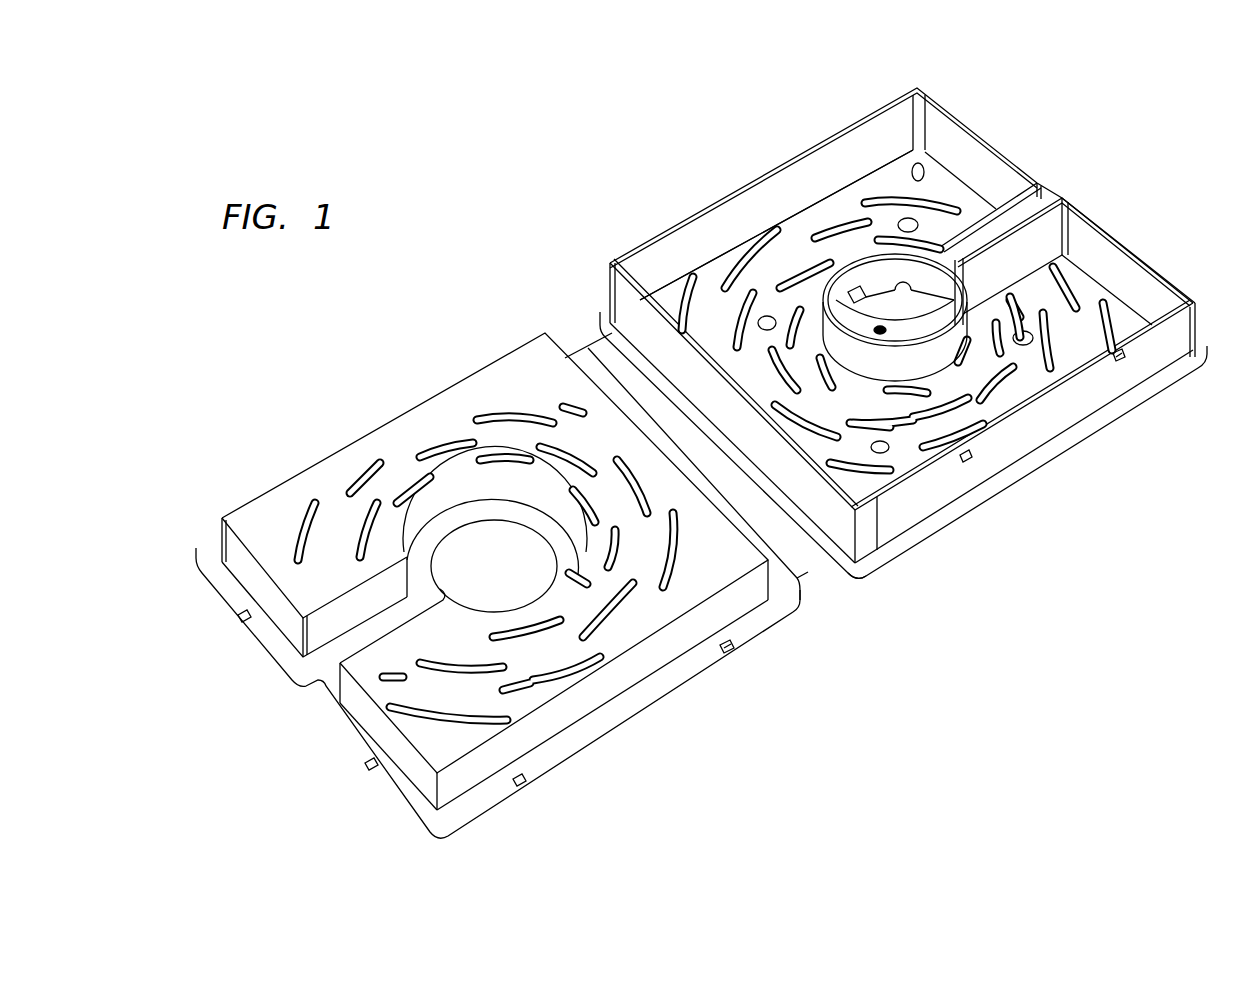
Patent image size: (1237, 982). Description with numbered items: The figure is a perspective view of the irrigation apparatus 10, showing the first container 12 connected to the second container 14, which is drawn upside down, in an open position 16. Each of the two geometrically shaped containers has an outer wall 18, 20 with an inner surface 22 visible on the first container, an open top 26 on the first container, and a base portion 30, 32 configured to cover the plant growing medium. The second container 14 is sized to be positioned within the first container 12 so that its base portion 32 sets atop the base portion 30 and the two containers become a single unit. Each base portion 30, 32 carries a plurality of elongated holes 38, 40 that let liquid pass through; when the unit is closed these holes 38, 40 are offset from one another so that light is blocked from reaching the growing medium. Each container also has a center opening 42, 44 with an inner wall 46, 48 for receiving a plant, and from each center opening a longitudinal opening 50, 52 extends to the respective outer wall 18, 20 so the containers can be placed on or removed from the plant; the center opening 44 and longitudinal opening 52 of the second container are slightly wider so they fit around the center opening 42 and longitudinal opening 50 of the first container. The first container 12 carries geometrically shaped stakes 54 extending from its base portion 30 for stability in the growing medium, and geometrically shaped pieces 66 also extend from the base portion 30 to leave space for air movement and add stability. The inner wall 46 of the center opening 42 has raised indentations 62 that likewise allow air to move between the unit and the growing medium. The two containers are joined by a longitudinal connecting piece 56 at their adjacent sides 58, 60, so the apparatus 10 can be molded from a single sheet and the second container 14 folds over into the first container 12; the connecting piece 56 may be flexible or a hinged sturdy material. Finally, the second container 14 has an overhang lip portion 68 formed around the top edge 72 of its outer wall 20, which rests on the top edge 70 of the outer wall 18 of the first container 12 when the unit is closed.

The irrigation apparatus 10 is at (601, 158).
The first container 12 is at (905, 110).
The second container 14 is at (548, 352).
The open position 16 is at (955, 718).
The outer wall 18 is at (627, 248).
The outer wall 20 is at (577, 702).
The inner surface 22 is at (858, 150).
The open top 26 is at (787, 140).
The base portion 30 is at (1086, 298).
The base portion 32 is at (360, 470).
The elongated holes 38 is at (812, 245).
The elongated holes 40 is at (305, 523).
The center opening 42 is at (908, 331).
The center opening 44 is at (478, 571).
The inner wall 46 is at (945, 334).
The inner wall 48 is at (478, 510).
The longitudinal opening 50 is at (998, 222).
The longitudinal opening 52 is at (318, 690).
The geometrically shaped stakes 54 is at (885, 448).
The longitudinal connecting piece 56 is at (813, 573).
The adjacent side 58 is at (875, 582).
The adjacent side 60 is at (820, 623).
The raised indentations 62 is at (870, 312).
The geometrically shaped pieces 66 is at (918, 168).
The overhang lip portion 68 is at (387, 790).
The top edge 70 is at (1120, 357).
The top edge 72 is at (726, 650).